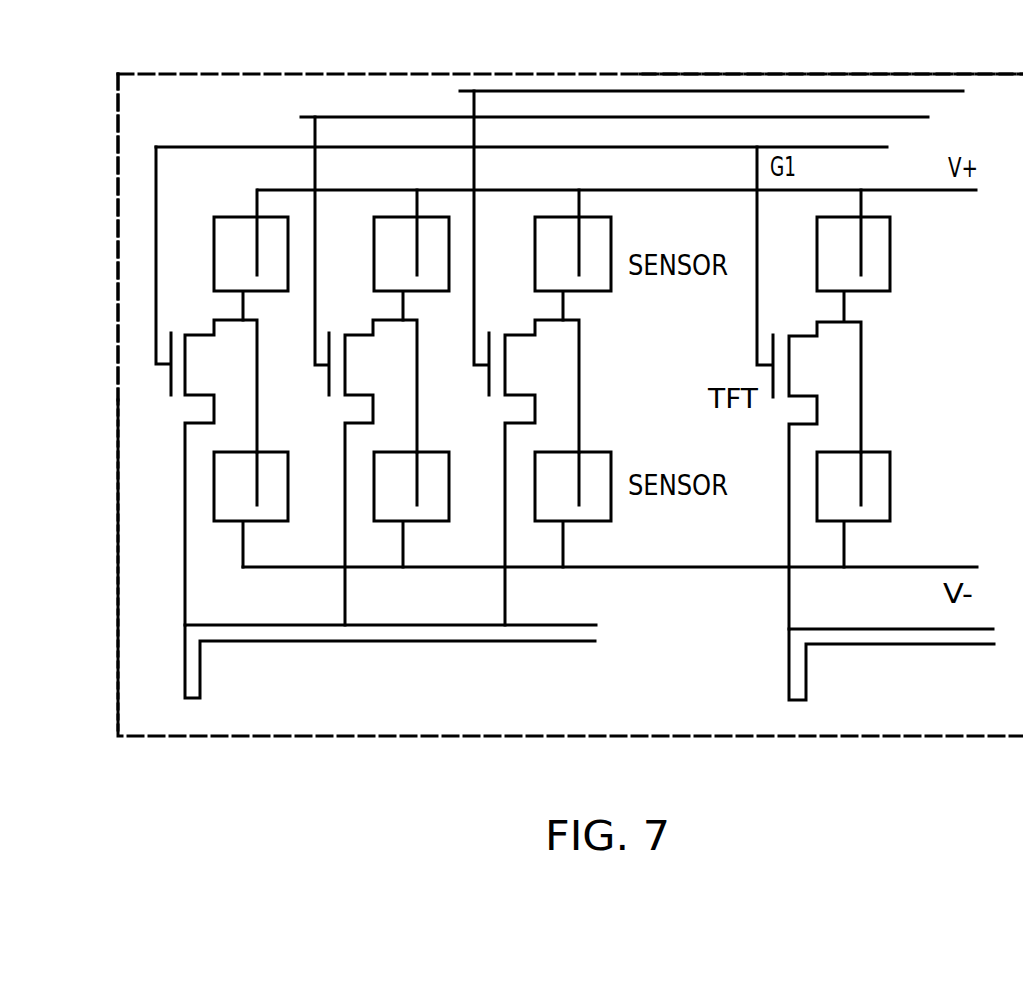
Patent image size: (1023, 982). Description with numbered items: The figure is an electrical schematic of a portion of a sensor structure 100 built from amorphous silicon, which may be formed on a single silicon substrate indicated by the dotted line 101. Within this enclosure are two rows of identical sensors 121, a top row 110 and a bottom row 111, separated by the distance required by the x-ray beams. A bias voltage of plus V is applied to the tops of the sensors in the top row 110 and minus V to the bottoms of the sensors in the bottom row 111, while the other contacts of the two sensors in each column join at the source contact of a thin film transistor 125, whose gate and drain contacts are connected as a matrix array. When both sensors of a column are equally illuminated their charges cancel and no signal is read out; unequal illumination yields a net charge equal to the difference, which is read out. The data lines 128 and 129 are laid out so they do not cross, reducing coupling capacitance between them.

The sensor structure 100 is at (400, 62).
The dotted line 101 is at (718, 72).
The top row 110 is at (110, 257).
The bottom row 111 is at (108, 509).
The sensors 121 is at (226, 217).
The thin film transistor 125 is at (190, 363).
The data line 128 is at (438, 643).
The data line 129 is at (847, 645).